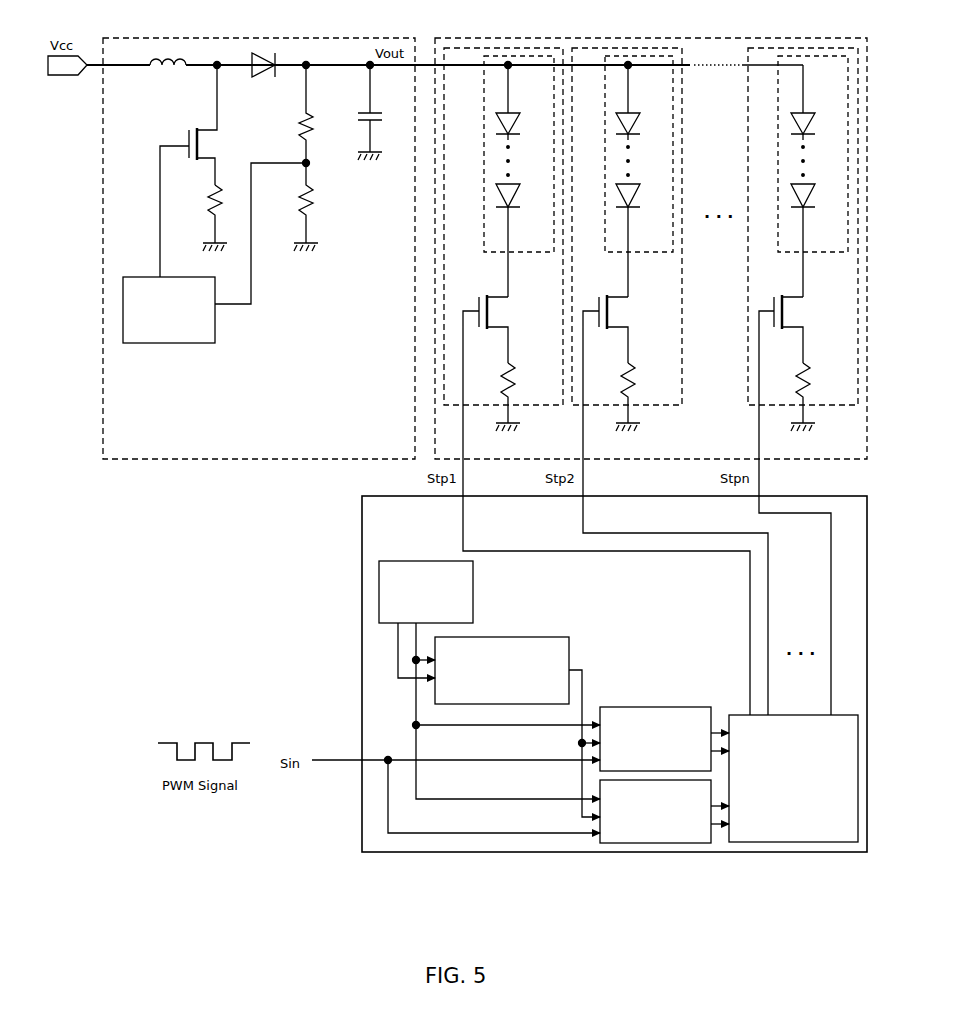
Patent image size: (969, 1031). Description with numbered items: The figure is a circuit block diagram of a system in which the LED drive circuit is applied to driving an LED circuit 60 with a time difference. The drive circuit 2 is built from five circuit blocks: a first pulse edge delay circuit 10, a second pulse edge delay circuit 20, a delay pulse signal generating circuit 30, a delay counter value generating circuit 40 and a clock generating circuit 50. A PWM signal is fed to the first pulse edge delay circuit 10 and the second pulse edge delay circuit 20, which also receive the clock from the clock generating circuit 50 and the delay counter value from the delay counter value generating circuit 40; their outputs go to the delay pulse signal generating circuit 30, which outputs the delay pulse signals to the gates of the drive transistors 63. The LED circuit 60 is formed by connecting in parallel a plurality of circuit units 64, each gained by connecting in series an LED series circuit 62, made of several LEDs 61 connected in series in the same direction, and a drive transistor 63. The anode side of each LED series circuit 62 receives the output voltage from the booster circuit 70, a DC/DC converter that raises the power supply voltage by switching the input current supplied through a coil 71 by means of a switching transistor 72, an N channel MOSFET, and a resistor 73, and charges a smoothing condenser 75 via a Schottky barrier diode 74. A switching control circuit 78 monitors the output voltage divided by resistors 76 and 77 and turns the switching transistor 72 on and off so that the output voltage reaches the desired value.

The drive circuit 2 is at (762, 852).
The first pulse edge delay circuit 10 is at (660, 707).
The second pulse edge delay circuit 20 is at (600, 791).
The delay pulse signal generating circuit 30 is at (848, 713).
The delay counter value generating circuit 40 is at (570, 653).
The clock generating circuit 50 is at (474, 590).
The LED circuit 60 is at (760, 39).
The LED 61 is at (522, 128).
The LED series circuit 62 is at (523, 255).
The drive transistor 63 is at (513, 316).
The circuit unit 64 is at (546, 405).
The booster circuit 70 is at (332, 39).
The coil 71 is at (172, 78).
The switching transistor 72 is at (218, 148).
The resistor 73 is at (198, 200).
The Schottky barrier diode 74 is at (263, 78).
The smoothing condenser 75 is at (386, 113).
The resistor 76 is at (326, 128).
The resistor 77 is at (290, 200).
The switching control circuit 78 is at (137, 276).